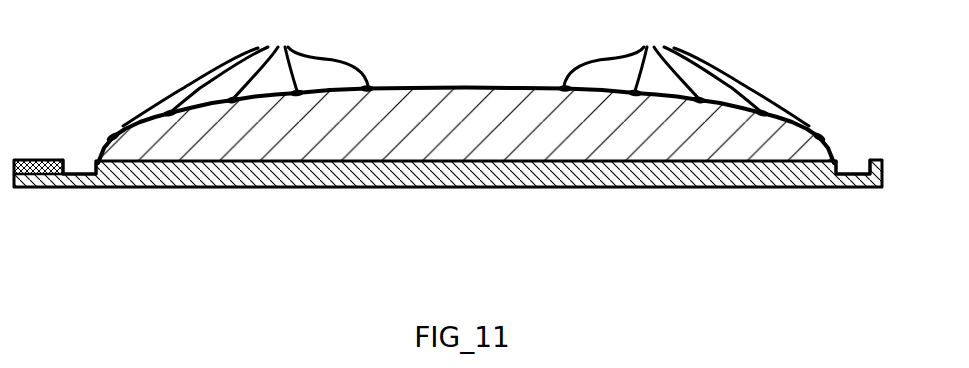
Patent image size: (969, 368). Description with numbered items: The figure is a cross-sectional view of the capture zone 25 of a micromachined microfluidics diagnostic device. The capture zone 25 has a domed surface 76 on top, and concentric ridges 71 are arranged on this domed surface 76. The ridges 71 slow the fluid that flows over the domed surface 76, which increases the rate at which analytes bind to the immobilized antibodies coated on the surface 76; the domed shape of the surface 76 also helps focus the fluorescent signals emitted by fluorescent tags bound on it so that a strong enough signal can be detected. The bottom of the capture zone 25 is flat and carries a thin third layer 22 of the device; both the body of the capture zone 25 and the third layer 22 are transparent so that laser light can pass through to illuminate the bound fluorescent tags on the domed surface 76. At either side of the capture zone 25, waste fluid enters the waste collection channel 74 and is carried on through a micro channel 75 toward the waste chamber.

The third layer 22 is at (692, 187).
The capture zone 25 is at (413, 128).
The concentric ridges 71 is at (465, 79).
The waste collection channel 74 is at (82, 172).
The micro channel 75 is at (40, 175).
The domed surface 76 is at (458, 88).